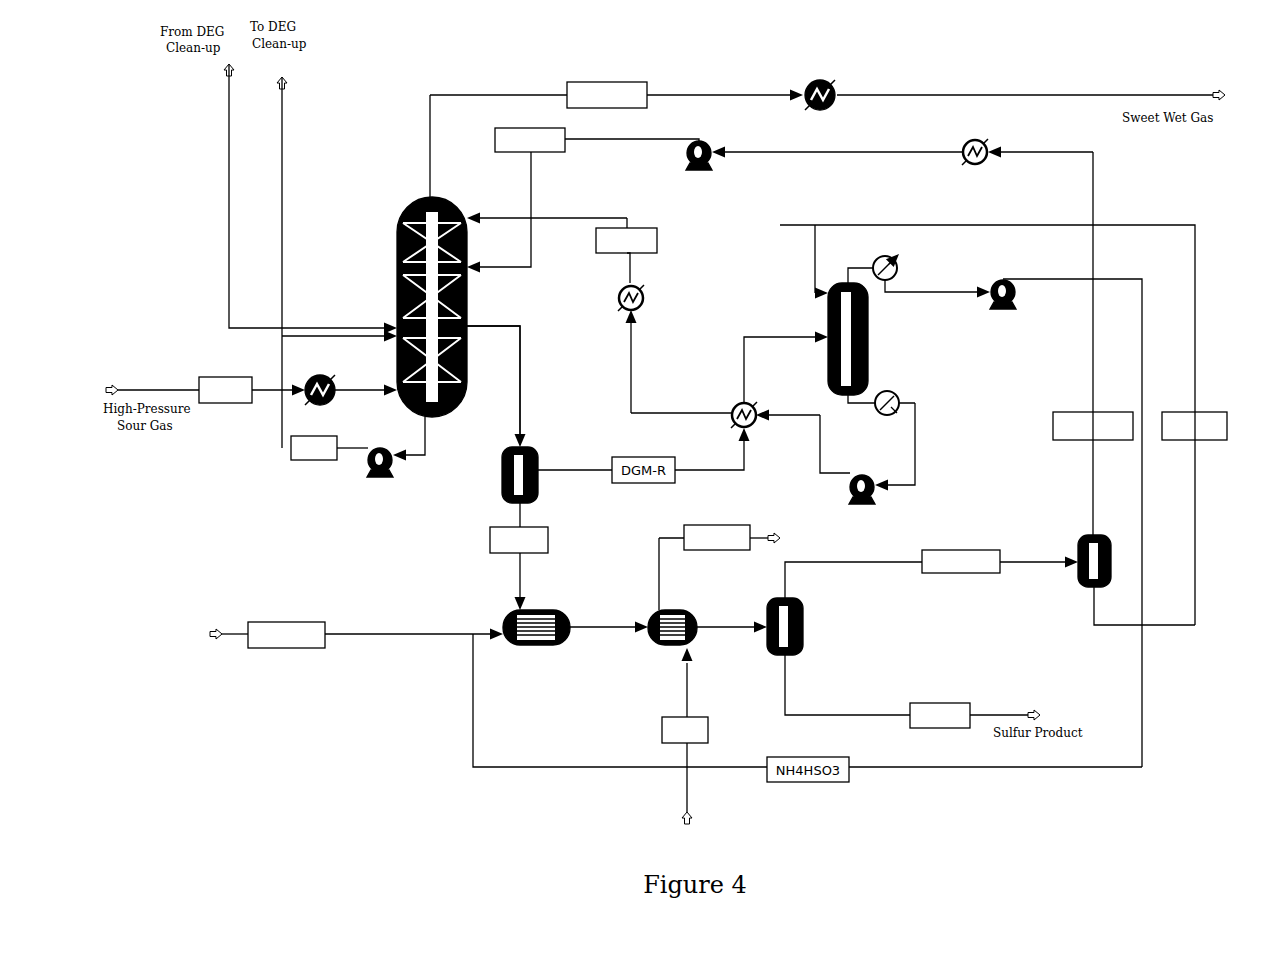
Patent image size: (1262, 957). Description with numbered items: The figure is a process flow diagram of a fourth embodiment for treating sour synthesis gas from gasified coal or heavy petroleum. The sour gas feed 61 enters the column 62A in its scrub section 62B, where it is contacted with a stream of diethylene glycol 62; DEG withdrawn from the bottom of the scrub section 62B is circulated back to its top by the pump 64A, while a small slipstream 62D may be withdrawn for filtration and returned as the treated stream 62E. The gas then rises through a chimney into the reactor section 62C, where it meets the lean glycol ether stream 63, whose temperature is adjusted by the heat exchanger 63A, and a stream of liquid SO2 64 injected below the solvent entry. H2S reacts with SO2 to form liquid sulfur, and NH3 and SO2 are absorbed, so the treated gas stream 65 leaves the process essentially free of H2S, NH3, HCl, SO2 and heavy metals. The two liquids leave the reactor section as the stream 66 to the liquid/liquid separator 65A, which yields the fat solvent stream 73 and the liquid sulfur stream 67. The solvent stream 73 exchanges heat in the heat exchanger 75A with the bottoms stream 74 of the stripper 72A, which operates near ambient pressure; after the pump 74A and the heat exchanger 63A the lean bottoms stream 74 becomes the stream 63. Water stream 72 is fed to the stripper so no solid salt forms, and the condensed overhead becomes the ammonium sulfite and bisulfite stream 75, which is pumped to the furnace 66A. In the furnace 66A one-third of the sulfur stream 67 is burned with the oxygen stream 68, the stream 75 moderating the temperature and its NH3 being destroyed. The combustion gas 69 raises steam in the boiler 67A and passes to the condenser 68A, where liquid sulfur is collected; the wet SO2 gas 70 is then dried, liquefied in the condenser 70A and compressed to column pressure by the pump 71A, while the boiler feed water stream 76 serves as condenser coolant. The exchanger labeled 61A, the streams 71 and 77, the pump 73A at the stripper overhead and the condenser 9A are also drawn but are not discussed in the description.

The sour gas feed 61 is at (170, 390).
The heat exchanger (HX1-H / HX1-C) 61A is at (568, 239).
The stream of diethylene glycol 62 is at (291, 448).
The column 62A is at (393, 307).
The scrub section 62B is at (406, 360).
The reactor section 62C is at (404, 270).
The slipstream 62D is at (282, 145).
The returned stream 62E is at (229, 155).
The stream of glycol ether 63 is at (577, 218).
The heat exchanger 63A is at (596, 306).
The stream of liquid SO2 64 is at (531, 183).
The pump 64A is at (375, 487).
The gas stream 65 is at (485, 95).
The liquid/liquid separator 65A is at (549, 483).
The stream 66 is at (520, 388).
The furnace 66A is at (536, 651).
The liquid sulfur stream 67 is at (520, 583).
The boiler 67A is at (654, 651).
The stream of oxygen 68 is at (380, 634).
The condenser 68A is at (816, 648).
The combustion gas 69 is at (600, 627).
The wet SO2 gas 70 is at (963, 550).
The condenser 70A is at (971, 150).
The LIQ-S2 sulfur product stream 71 is at (935, 703).
The pump 71A is at (669, 166).
The water stream 72 is at (987, 418).
The stripper 72A is at (873, 332).
The solvent stream 73 is at (744, 368).
The PUMP-3 73A is at (1002, 315).
The bottoms stream 74 is at (915, 442).
The pump 74A is at (860, 511).
The stream 75 is at (1142, 279).
The heat exchanger 75A is at (758, 432).
The boiler feed water stream 76 is at (662, 728).
The steam stream 77 is at (659, 538).
The condenser CNDNSR-2 9A is at (1057, 579).